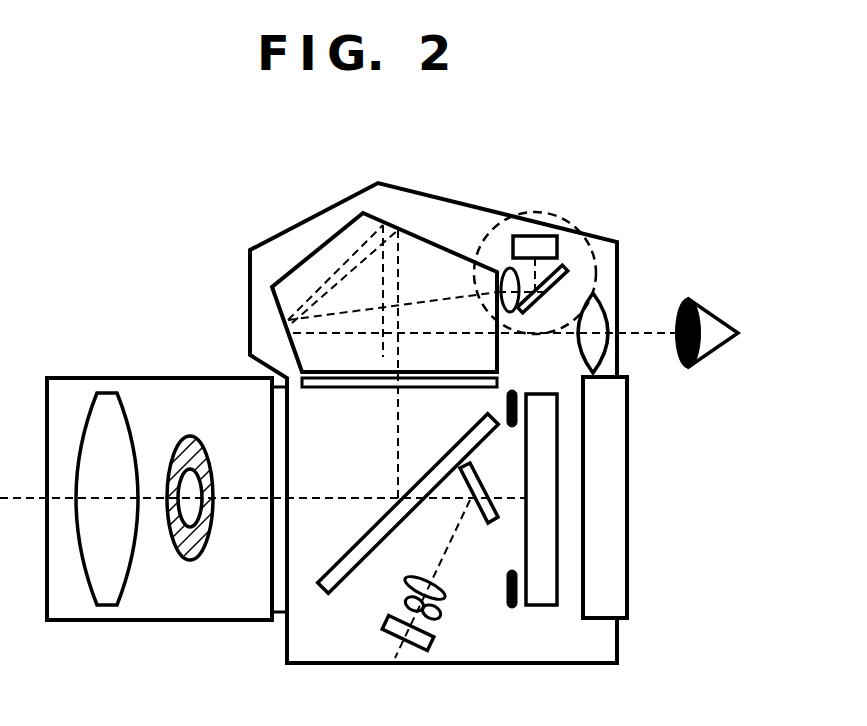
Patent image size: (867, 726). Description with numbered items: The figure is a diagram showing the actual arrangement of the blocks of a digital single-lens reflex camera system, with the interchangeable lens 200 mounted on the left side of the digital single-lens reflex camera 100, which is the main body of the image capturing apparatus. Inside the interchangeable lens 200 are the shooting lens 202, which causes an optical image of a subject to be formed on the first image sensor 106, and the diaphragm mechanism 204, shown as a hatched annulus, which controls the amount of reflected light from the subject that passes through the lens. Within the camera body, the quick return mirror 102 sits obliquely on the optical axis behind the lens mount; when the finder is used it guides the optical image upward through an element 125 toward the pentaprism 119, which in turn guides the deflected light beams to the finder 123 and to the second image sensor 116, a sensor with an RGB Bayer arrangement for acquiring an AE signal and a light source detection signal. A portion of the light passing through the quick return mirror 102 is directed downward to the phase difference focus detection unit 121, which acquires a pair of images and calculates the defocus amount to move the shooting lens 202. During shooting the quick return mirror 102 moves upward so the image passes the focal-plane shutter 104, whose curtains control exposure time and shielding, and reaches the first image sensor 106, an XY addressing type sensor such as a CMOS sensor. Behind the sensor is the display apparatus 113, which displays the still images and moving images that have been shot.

The digital single-lens reflex camera 100 is at (618, 645).
The quick return mirror 102 is at (364, 527).
The focal-plane shutter 104 is at (509, 608).
The first image sensor 106 is at (529, 606).
The display apparatus 113 is at (627, 520).
The second image sensor 116 is at (531, 236).
The pentaprism 119 is at (306, 258).
The phase difference focus detection unit 121 is at (384, 632).
The finder 123 is at (600, 300).
The focusing screen 125 is at (421, 388).
The interchangeable lens 200 is at (155, 620).
The shooting lens 202 is at (106, 393).
The diaphragm mechanism 204 is at (190, 437).